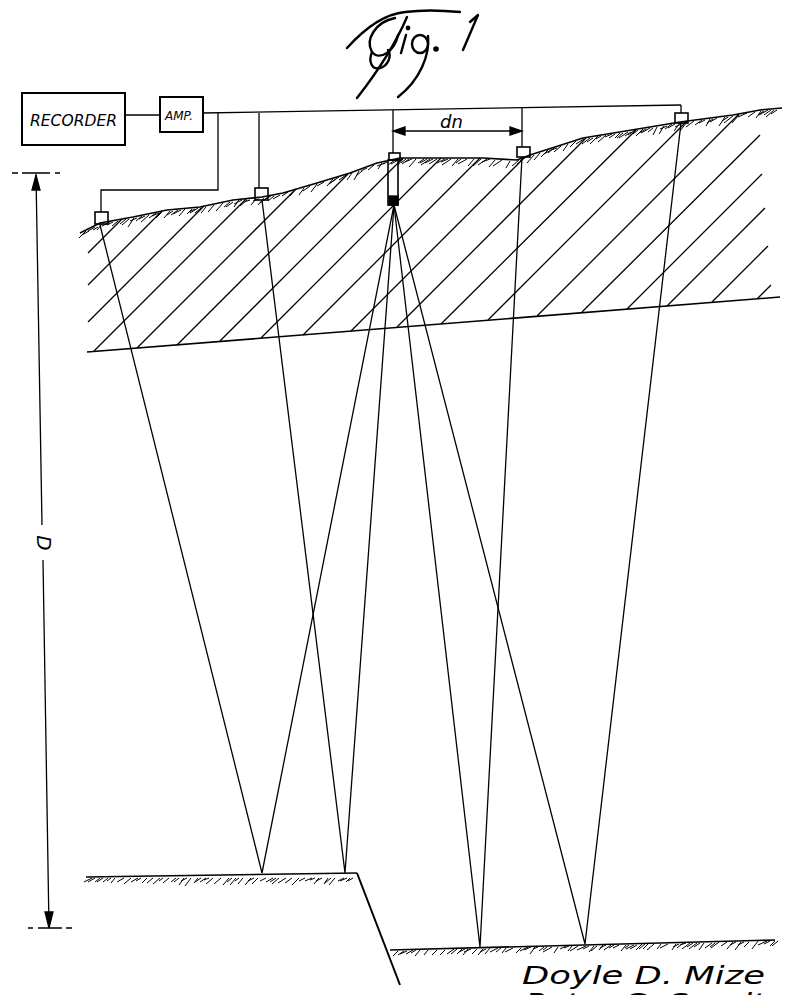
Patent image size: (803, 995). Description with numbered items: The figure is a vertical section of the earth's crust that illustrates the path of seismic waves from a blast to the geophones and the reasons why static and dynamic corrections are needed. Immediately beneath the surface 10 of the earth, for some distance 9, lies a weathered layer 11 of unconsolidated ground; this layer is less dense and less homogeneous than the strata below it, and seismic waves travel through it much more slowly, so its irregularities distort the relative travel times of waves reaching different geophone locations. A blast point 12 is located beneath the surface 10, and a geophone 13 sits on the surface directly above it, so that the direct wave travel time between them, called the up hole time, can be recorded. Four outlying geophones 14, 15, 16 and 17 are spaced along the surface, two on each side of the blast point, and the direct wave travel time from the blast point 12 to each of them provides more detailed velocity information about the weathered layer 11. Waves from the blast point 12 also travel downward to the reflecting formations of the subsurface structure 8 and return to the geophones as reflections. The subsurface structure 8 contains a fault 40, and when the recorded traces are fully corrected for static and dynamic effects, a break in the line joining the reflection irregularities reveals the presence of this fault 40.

The subsurface structure 8 is at (217, 904).
The distance below the surface 9 is at (80, 225).
The surface of the earth 10 is at (312, 184).
The weathered layer 11 is at (113, 352).
The blast point 12 is at (400, 206).
The geophone 13 is at (388, 155).
The outlying geophone 14 is at (530, 150).
The outlying geophone 15 is at (688, 114).
The outlying geophone 16 is at (266, 188).
The outlying geophone 17 is at (95, 218).
The fault 40 is at (364, 911).